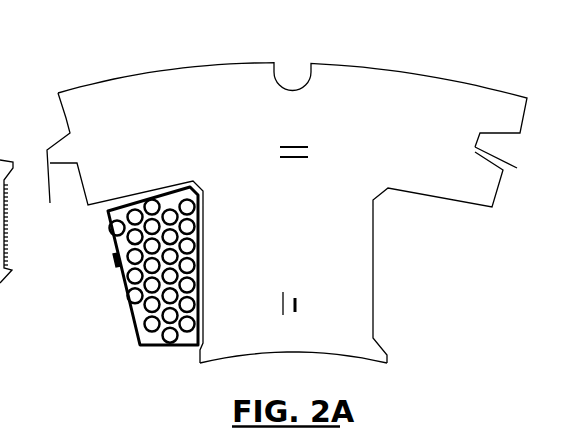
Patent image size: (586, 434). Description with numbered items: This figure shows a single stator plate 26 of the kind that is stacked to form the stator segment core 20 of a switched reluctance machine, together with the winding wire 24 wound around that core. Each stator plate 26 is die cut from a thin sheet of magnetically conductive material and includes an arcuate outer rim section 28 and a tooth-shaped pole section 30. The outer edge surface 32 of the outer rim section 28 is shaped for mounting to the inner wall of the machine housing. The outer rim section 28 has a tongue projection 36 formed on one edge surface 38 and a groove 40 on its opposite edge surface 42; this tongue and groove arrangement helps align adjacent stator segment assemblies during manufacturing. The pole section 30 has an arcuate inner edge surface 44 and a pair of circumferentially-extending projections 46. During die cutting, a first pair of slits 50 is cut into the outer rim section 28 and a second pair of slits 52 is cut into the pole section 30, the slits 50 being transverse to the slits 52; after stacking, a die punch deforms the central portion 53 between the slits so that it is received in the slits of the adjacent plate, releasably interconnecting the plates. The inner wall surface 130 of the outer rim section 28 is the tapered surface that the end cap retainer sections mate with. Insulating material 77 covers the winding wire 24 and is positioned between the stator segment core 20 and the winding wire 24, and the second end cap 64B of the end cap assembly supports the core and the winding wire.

The stator segment core 20 is at (455, 53).
The winding wire 24 is at (140, 327).
The stator plate 26 is at (203, 95).
The outer rim section 28 is at (422, 134).
The pole section 30 is at (305, 252).
The outer edge surface 32 is at (125, 73).
The tongue projection 36 is at (52, 200).
The edge surface 38 is at (67, 118).
The groove 40 is at (505, 162).
The opposite edge surface 42 is at (523, 118).
The arcuate inner edge surface 44 is at (333, 357).
The circumferentially-extending projections 46 is at (195, 357).
The first pair of slits 50 is at (293, 147).
The second pair of slits 52 is at (278, 298).
The central portion 53 is at (280, 148).
The insulating material 77 is at (113, 265).
The inner wall surface 130 is at (140, 195).
The second end cap 64B is at (15, 195).